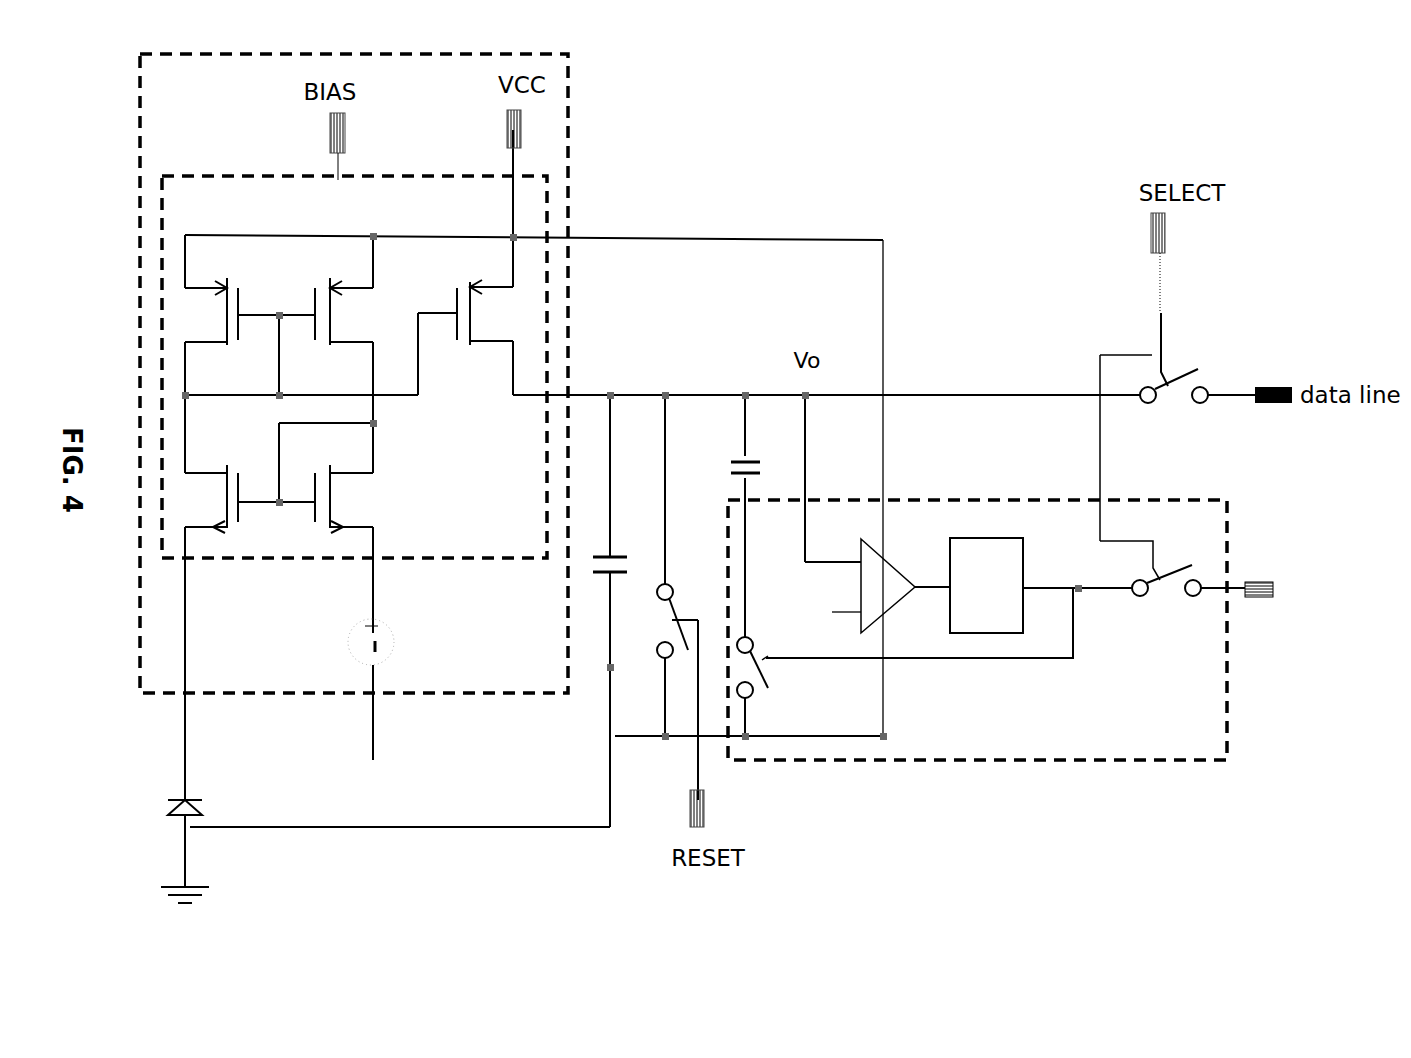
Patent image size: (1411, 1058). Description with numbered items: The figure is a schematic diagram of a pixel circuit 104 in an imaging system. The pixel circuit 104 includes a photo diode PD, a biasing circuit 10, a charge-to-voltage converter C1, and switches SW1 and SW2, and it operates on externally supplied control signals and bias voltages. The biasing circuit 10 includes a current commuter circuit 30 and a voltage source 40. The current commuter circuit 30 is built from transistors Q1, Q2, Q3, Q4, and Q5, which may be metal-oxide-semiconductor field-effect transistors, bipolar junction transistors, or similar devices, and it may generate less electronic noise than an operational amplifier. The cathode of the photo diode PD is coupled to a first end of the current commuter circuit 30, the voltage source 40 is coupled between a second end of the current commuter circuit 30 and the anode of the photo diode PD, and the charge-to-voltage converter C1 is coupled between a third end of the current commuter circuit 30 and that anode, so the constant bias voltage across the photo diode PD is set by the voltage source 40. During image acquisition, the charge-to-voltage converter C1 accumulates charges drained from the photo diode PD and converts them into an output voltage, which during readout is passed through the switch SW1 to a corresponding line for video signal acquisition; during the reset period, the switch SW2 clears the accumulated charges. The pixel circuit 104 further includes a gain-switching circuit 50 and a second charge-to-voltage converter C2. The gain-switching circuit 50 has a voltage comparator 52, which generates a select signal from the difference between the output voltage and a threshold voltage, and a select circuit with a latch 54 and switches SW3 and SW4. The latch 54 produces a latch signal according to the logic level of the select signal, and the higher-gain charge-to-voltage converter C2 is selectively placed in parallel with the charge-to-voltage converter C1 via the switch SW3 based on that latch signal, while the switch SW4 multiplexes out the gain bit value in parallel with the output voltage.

The pixel circuit 104 is at (1297, 104).
The biasing circuit 10 is at (577, 62).
The current commuter circuit 30 is at (460, 565).
The voltage source 40 is at (356, 636).
The gain-switching circuit 50 is at (1125, 768).
The voltage comparator 52 is at (895, 598).
The latch 54 is at (1000, 605).
The transistor Q1 is at (218, 485).
The transistor Q2 is at (343, 485).
The transistor Q3 is at (218, 299).
The transistor Q4 is at (343, 299).
The transistor Q5 is at (465, 299).
The charge-to-voltage converter C1 is at (604, 611).
The charge-to-voltage converter C2 is at (730, 516).
The switch SW1 is at (1177, 427).
The switch SW2 is at (654, 565).
The switch SW3 is at (783, 686).
The switch SW4 is at (1172, 588).
The photo diode PD is at (200, 715).